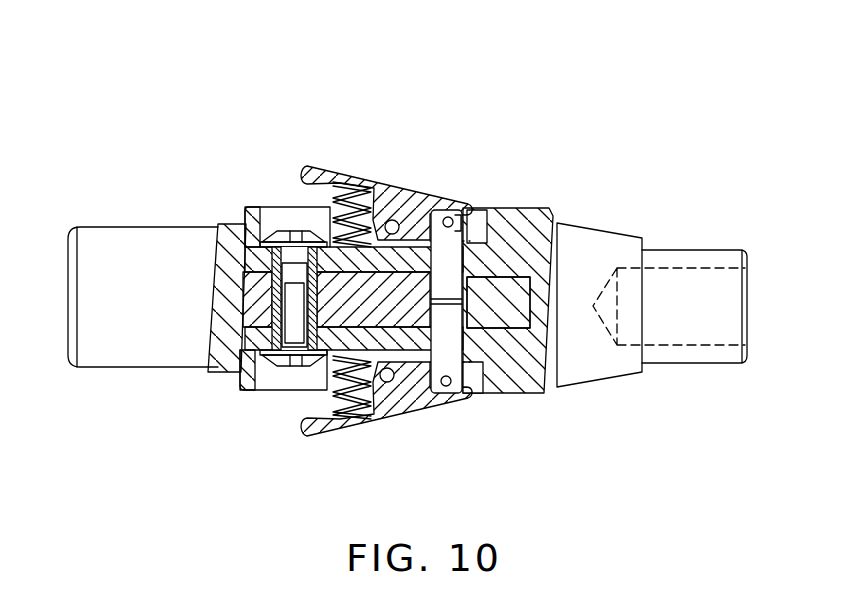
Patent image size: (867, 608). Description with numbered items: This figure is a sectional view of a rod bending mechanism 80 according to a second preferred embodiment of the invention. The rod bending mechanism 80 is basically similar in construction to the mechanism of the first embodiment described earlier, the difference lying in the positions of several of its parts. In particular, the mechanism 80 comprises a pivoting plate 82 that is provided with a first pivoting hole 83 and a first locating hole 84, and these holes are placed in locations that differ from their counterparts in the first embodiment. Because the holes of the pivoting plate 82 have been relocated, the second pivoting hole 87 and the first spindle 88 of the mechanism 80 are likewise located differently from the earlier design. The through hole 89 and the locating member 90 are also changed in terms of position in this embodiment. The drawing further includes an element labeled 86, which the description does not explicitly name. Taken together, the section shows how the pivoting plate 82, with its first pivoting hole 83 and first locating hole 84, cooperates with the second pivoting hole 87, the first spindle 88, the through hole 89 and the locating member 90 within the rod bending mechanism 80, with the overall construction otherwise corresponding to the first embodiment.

The rod bending mechanism 80 is at (274, 75).
The pivoting plate 82 is at (510, 283).
The first pivoting hole 83 is at (243, 275).
The first locating hole 84 is at (509, 370).
The lower latch lever 86 is at (492, 396).
The second pivoting hole 87 is at (229, 358).
The first spindle 88 is at (282, 237).
The through hole 89 is at (467, 262).
The locating member 90 is at (393, 183).